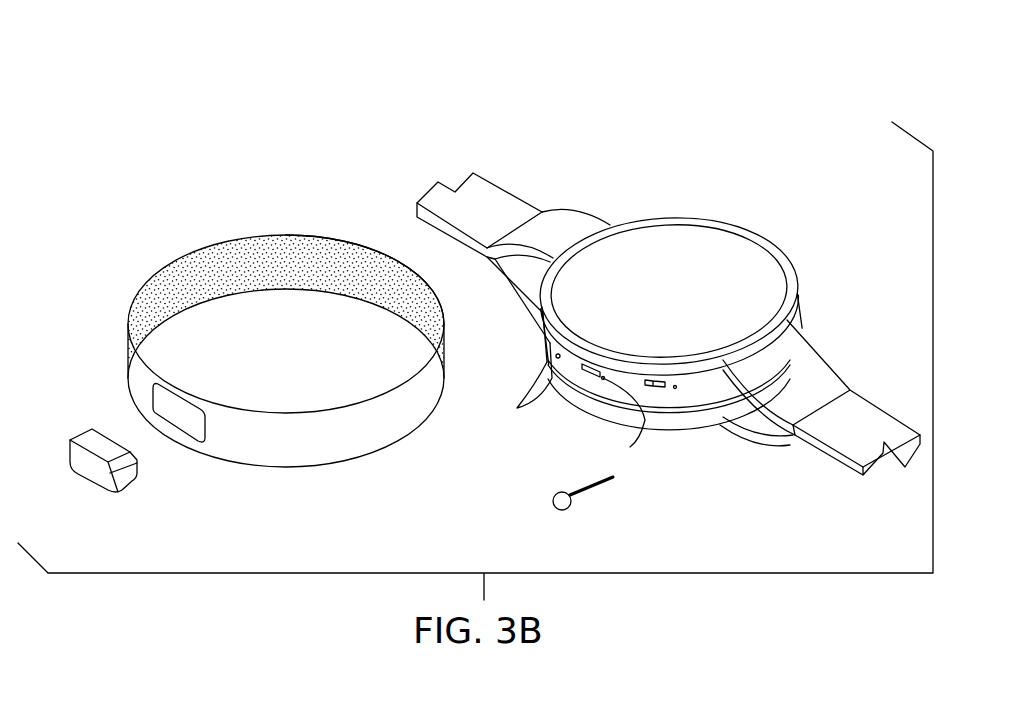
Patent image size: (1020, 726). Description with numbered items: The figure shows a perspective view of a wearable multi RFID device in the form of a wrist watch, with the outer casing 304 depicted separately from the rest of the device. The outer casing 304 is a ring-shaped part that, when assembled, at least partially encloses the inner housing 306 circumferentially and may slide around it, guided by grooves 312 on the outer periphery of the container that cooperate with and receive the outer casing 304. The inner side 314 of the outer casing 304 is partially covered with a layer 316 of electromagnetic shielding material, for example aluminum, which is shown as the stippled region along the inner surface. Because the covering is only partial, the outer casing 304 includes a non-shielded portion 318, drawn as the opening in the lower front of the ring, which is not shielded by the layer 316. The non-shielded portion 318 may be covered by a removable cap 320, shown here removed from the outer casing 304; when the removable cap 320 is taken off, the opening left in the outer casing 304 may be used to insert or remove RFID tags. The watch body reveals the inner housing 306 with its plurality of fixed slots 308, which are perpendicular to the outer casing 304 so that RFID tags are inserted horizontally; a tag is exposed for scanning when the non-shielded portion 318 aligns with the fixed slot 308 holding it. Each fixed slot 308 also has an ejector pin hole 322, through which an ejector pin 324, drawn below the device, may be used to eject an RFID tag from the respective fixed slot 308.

The outer casing 304 is at (158, 242).
The inner housing 306 is at (692, 400).
The fixed slots 308 is at (647, 390).
The grooves 312 is at (605, 406).
The inner side 314 is at (373, 248).
The layer of electromagnetic shielding material 316 is at (363, 275).
The non-shielded portion 318 is at (165, 409).
The removable cap 320 is at (88, 485).
The ejector pin hole 322 is at (600, 378).
The ejector pin 324 is at (607, 482).